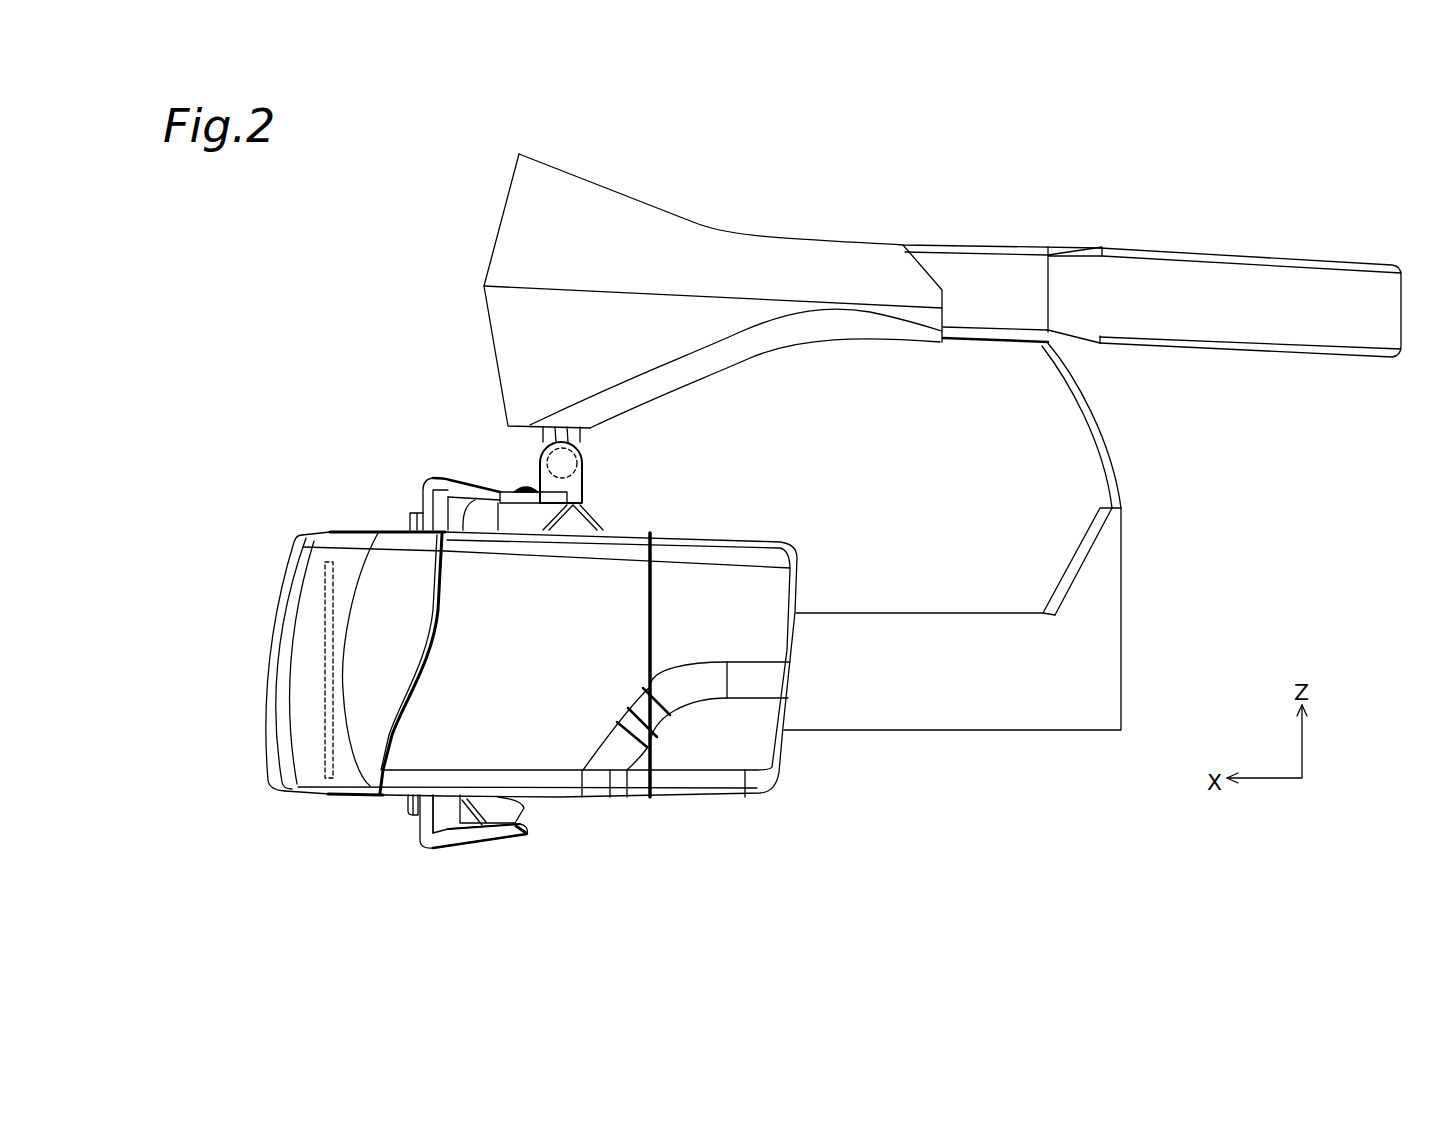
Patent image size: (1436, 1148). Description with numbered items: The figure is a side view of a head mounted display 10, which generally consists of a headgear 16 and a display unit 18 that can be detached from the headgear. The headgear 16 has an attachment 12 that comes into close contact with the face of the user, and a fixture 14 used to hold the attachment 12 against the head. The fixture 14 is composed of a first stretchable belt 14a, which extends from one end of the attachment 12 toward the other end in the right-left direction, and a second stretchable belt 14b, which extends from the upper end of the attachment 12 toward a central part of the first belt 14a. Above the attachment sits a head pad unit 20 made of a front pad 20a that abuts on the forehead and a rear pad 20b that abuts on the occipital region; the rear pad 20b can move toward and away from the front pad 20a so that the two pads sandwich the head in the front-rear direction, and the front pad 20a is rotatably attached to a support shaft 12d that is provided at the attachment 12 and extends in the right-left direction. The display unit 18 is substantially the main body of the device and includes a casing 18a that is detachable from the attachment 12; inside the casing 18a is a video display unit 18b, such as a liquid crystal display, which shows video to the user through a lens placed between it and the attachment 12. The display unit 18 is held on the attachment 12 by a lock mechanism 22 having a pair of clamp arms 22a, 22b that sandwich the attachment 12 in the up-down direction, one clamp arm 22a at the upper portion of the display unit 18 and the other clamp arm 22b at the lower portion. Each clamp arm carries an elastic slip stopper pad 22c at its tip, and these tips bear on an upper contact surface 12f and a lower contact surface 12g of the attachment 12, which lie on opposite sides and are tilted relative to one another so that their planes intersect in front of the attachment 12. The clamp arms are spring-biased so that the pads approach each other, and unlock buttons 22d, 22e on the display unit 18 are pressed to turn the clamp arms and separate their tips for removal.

The head mounted display 10 is at (375, 282).
The attachment 12 is at (554, 665).
The support shaft 12d is at (582, 462).
The upper contact surface 12f is at (497, 491).
The lower contact surface 12g is at (527, 836).
The fixture 14 is at (988, 536).
The first stretchable belt 14a is at (940, 686).
The second stretchable belt 14b is at (1118, 452).
The headgear 16 is at (1108, 218).
The display unit 18 is at (514, 690).
The casing 18a is at (540, 657).
The video display unit 18b is at (323, 617).
The head pad unit 20 is at (942, 291).
The front pad 20a is at (730, 282).
The rear pad 20b is at (1260, 318).
The lock mechanism 22 is at (443, 641).
The clamp arm 22a is at (445, 478).
The clamp arm 22b is at (487, 848).
The slip stopper pad 22c is at (463, 520).
The unlock button 22d is at (413, 512).
The unlock button 22e is at (411, 816).